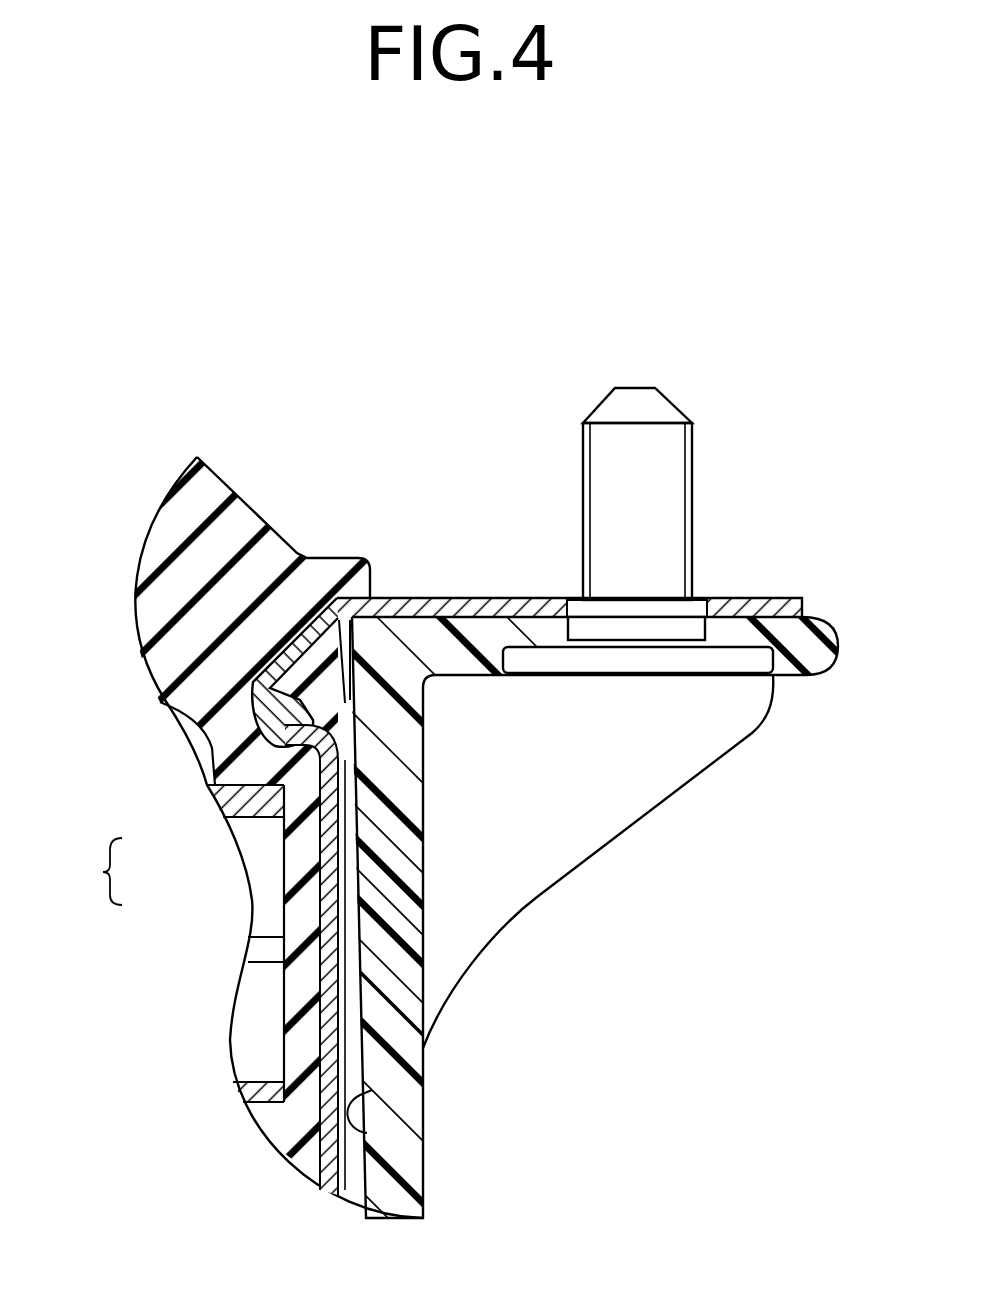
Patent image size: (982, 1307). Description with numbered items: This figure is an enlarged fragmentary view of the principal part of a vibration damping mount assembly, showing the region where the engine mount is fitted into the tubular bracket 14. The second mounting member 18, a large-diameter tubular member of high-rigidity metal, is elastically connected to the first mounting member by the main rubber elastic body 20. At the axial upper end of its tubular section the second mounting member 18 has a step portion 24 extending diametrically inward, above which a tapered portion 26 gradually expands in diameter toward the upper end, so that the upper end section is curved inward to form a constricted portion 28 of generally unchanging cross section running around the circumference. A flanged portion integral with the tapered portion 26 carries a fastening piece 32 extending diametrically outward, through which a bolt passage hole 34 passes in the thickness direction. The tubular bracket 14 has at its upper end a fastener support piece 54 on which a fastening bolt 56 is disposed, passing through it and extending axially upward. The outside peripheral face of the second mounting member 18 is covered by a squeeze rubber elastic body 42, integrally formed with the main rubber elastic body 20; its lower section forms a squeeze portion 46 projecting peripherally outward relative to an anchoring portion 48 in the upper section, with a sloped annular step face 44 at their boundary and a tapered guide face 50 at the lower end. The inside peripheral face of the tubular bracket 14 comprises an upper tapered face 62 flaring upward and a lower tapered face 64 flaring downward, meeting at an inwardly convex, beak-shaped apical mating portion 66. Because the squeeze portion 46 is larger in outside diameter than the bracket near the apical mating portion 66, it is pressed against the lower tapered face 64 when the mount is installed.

The tubular bracket 14 is at (436, 1094).
The second mounting member 18 is at (340, 818).
The main rubber elastic body 20 is at (262, 520).
The step portion 24 is at (375, 757).
The tapered portion 26 is at (302, 628).
The constricted portion 28 is at (245, 670).
The fastening piece 32 is at (512, 612).
The bolt passage hole 34 is at (700, 612).
The squeeze rubber elastic body 42 is at (92, 871).
The annular step face 44 is at (348, 705).
The squeeze portion 46 is at (345, 880).
The anchoring portion 48 is at (280, 800).
The tapered guide face 50 is at (365, 960).
The fastener support piece 54 is at (810, 640).
The fastening bolt 56 is at (650, 468).
The upper tapered face 62 is at (350, 622).
The lower tapered face 64 is at (367, 1133).
The apical mating portion 66 is at (348, 703).